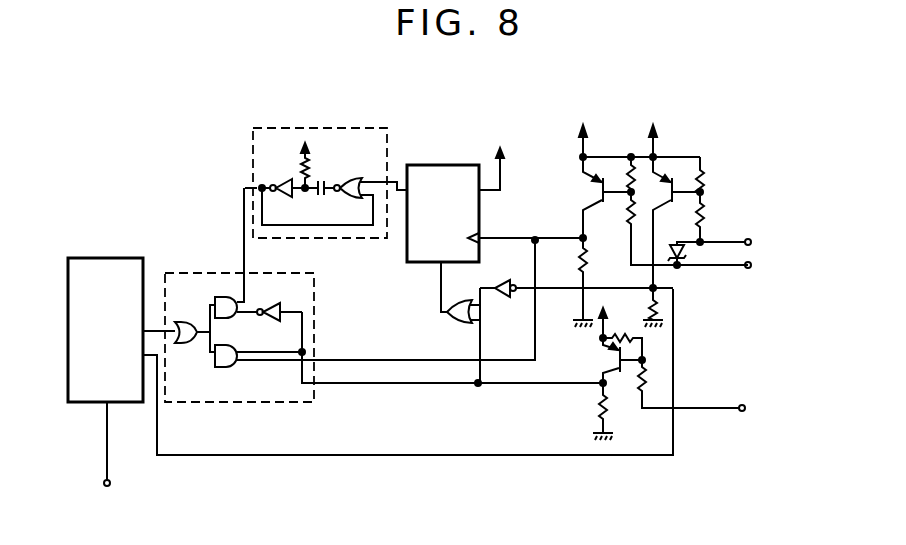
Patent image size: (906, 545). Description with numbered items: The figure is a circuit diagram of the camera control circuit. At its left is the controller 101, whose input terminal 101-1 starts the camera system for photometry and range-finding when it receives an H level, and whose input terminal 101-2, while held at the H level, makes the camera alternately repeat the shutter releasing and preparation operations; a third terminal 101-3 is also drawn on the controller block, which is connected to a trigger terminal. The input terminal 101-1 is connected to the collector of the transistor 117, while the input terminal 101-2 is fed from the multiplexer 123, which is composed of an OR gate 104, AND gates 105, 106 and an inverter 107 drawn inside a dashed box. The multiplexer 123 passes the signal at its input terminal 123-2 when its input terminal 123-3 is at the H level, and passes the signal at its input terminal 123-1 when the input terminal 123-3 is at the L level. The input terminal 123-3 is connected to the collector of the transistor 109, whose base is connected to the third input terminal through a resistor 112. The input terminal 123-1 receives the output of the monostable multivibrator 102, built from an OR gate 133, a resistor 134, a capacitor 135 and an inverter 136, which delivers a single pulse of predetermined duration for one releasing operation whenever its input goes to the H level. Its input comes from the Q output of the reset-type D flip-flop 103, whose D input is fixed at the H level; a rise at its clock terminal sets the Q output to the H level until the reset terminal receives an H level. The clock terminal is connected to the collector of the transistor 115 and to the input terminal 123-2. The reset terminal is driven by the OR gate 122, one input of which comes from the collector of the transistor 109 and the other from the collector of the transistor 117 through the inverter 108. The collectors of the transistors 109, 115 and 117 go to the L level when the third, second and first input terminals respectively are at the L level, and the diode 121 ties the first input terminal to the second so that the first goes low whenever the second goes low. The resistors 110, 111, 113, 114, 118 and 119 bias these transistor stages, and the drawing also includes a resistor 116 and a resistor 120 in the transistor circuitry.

The controller 101 is at (103, 256).
The input terminal 101-1 is at (376, 372).
The input terminal 101-2 is at (127, 332).
The output terminal of control circuit 101-3 is at (102, 379).
The monostable multivibrator 102 is at (287, 127).
The reset-type D flip-flop 103 is at (440, 163).
The OR gate 104 is at (186, 318).
The AND gate 105 is at (232, 318).
The AND gate 106 is at (224, 367).
The inverter 107 is at (281, 306).
The inverter 108 is at (503, 268).
The transistor 109 is at (610, 358).
The resistor 110 is at (597, 408).
The resistor 111 is at (620, 333).
The resistor 112 is at (650, 380).
The resistor 113 is at (627, 178).
The resistor 114 is at (566, 281).
The transistor 115 is at (587, 189).
The resistor 116 is at (628, 210).
The transistor 117 is at (672, 190).
The resistor 118 is at (707, 175).
The resistor 119 is at (707, 210).
The resistor 120 is at (629, 298).
The diode 121 is at (683, 253).
The OR gate 122 is at (446, 316).
The multiplexer 123 is at (188, 403).
The input terminal 123-1 is at (202, 256).
The input terminal 123-2 is at (387, 298).
The input terminal 123-3 is at (452, 363).
The OR gate 133 is at (357, 168).
The resistor 134 is at (310, 168).
The capacitor 135 is at (323, 192).
The inverter 136 is at (283, 182).